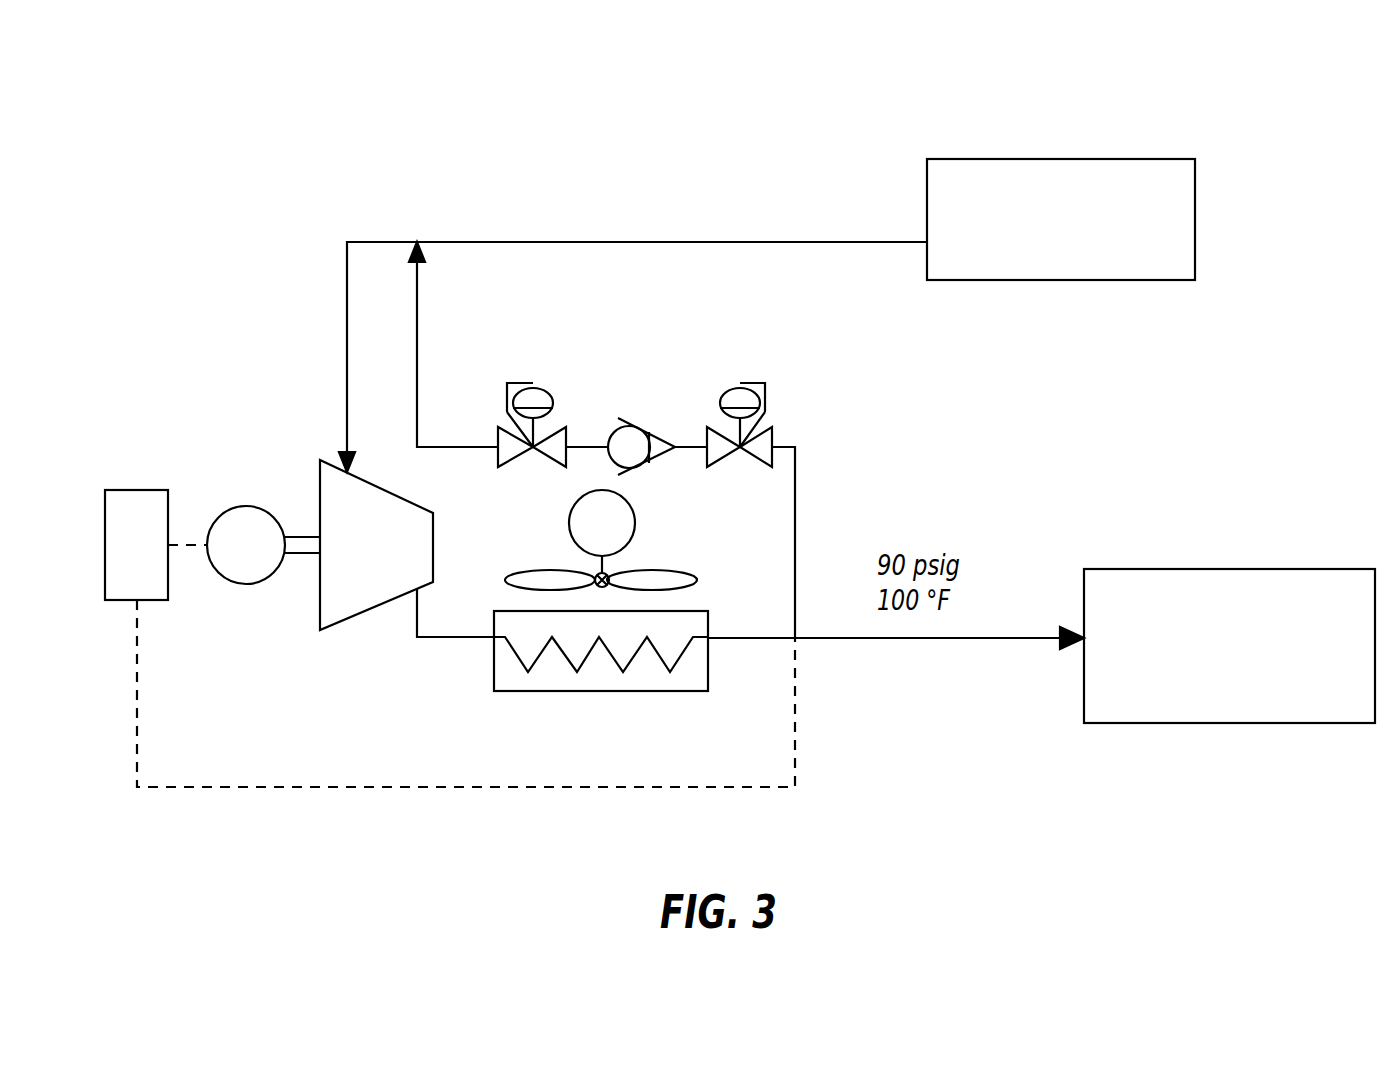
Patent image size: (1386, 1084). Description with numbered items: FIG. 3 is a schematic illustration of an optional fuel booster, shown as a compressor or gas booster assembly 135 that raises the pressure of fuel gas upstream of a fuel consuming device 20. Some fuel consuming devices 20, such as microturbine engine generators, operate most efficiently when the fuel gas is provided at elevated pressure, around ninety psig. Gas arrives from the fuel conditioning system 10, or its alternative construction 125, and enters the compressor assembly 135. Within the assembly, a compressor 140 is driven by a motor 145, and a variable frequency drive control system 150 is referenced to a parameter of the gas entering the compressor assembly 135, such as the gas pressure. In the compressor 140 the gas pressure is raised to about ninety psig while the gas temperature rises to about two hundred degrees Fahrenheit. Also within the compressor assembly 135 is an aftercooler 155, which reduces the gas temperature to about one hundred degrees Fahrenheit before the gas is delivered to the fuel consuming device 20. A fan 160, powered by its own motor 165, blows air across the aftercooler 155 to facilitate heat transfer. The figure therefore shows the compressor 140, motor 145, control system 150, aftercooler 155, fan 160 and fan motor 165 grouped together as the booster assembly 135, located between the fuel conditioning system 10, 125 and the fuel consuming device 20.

The fuel conditioning system 10 is at (1061, 183).
The alternative construction of the fuel conditioning system 125 is at (990, 159).
The fuel consuming device 20 is at (1157, 569).
The compressor assembly 135 is at (243, 217).
The compressor 140 is at (317, 490).
The motor 145 is at (247, 517).
The variable frequency drive control system 150 is at (105, 532).
The aftercooler 155 is at (578, 691).
The fan 160 is at (665, 580).
The motor 165 is at (618, 514).